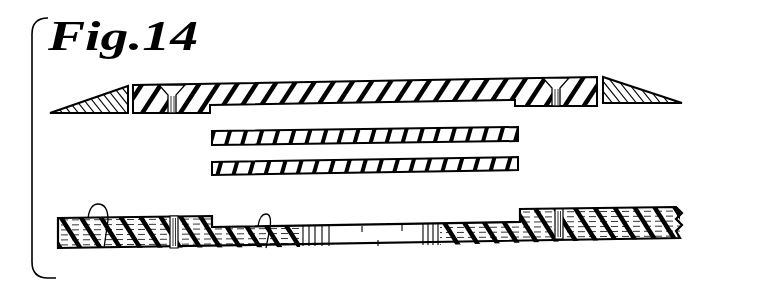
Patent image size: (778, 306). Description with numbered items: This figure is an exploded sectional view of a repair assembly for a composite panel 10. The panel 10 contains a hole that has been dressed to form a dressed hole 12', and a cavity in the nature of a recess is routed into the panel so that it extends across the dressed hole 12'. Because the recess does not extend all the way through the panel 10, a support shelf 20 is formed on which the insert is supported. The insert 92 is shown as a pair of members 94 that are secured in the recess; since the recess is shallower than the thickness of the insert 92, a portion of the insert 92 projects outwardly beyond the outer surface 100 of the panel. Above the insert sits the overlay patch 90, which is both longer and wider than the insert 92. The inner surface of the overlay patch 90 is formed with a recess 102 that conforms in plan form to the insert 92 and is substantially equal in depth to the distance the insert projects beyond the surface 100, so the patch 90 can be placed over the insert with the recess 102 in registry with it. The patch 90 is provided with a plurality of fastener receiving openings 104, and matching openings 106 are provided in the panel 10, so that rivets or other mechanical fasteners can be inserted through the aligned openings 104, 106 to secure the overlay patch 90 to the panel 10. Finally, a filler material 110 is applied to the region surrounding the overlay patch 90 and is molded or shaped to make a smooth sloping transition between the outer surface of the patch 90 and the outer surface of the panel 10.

The composite panel 10 is at (668, 208).
The dressed hole 12' is at (370, 258).
The support shelf 20 is at (266, 250).
The overlay patch 90 is at (389, 83).
The insert 92 is at (373, 157).
The insert member 94 is at (212, 135).
The outer surface 100 is at (101, 249).
The recess 102 is at (300, 102).
The fastener receiving openings 104 is at (171, 84).
The matching openings 106 is at (174, 250).
The filler material 110 is at (72, 100).